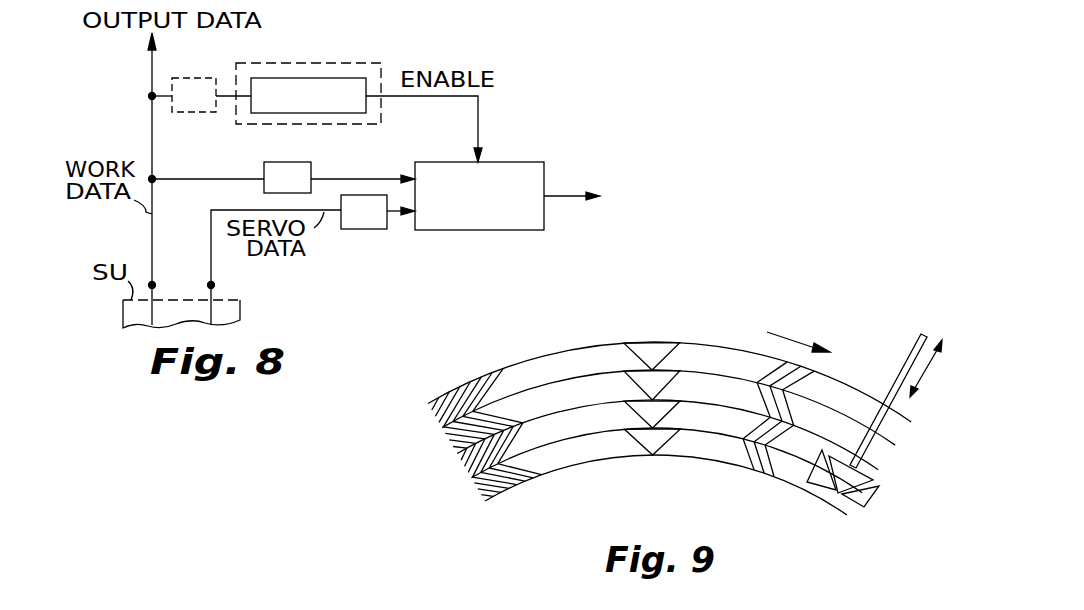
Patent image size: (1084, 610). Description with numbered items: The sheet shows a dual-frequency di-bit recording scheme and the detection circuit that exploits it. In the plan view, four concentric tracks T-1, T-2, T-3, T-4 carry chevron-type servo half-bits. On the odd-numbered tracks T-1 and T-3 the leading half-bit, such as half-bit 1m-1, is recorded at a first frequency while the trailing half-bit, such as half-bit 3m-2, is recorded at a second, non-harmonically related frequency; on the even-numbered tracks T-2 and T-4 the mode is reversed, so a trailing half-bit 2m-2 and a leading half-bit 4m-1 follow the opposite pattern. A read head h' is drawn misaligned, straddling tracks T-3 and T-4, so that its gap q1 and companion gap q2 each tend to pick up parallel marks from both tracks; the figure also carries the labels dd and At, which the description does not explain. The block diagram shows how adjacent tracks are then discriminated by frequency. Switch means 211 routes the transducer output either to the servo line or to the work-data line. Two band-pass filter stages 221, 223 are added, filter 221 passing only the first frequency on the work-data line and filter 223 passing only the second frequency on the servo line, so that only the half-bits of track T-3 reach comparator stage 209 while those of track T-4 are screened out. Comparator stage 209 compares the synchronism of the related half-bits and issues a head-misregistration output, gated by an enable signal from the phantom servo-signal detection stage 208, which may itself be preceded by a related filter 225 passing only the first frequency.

In FIG. 8, the gate FA 225 is at (196, 78).
In FIG. 8, the servo-signal detection stage 208 is at (318, 63).
In FIG. 8, the band-pass filter stage 221 is at (287, 162).
In FIG. 8, the band-pass filter stage 223 is at (368, 229).
In FIG. 8, the comparator stage 209 is at (511, 162).
In FIG. 8, the switch means 211 is at (240, 312).
In FIG. 9, the leading half-bit 1m-1 is at (663, 372).
In FIG. 9, the servo mark 2m-2 is at (609, 347).
In FIG. 9, the trailing half-bit 3m-2 is at (604, 433).
In FIG. 9, the leading half-bit 4m-1 is at (668, 447).
In FIG. 9, the odd-numbered track T-1 is at (438, 419).
In FIG. 9, the even-numbered track T-2 is at (452, 448).
In FIG. 9, the odd-numbered track T-3 is at (462, 472).
In FIG. 9, the even-numbered track T-4 is at (478, 492).
In FIG. 9, the dividing mark dd is at (508, 372).
In FIG. 9, the read head h' is at (834, 419).
In FIG. 9, the arm At is at (907, 355).
In FIG. 9, the head gap q1 is at (814, 478).
In FIG. 9, the head gap q2 is at (874, 497).